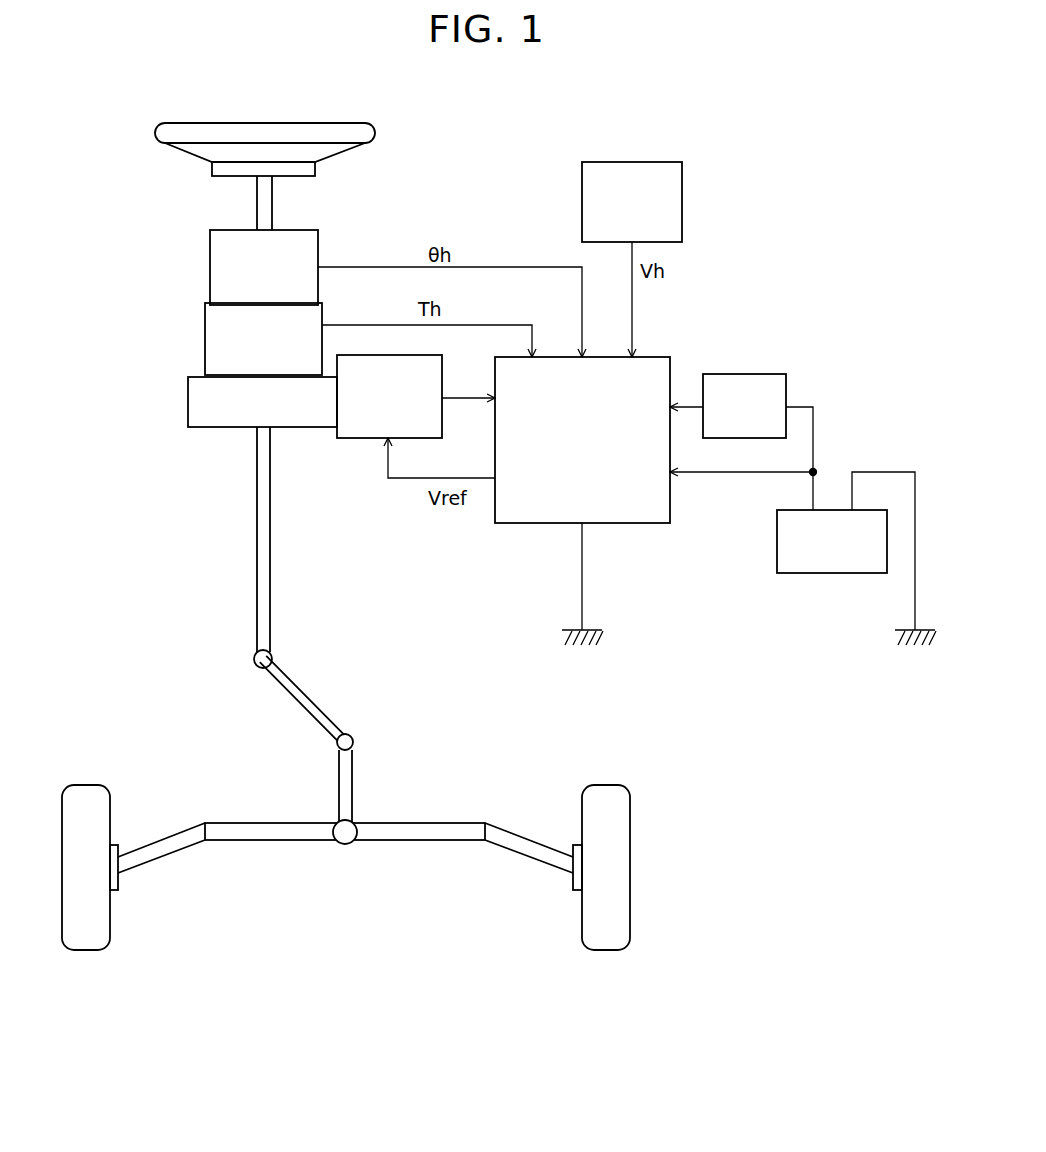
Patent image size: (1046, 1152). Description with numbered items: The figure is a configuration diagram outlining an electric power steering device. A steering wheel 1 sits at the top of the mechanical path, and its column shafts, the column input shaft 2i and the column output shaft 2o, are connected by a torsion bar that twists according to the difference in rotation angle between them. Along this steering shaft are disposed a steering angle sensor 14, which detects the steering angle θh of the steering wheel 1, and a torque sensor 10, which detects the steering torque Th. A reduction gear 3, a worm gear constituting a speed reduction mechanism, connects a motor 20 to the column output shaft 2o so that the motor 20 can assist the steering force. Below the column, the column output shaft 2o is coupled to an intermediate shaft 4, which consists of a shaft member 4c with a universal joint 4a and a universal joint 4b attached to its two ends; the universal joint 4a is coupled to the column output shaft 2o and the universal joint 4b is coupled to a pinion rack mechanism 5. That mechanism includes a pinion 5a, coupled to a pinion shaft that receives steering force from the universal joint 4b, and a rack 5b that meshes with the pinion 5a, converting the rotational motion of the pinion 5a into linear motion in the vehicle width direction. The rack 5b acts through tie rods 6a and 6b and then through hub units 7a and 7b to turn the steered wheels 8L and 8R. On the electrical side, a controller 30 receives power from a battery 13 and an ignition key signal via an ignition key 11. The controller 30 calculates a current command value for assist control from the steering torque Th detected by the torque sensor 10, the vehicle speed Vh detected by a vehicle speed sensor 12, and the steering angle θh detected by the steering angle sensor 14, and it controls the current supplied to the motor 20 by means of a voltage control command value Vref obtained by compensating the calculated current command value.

The steering wheel 1 is at (345, 123).
The column input shaft 2i is at (256, 207).
The steering angle sensor 14 is at (210, 271).
The torque sensor 10 is at (205, 334).
The reduction gear 3 is at (188, 394).
The motor 20 is at (360, 438).
The vehicle speed sensor 12 is at (642, 160).
The controller 30 is at (657, 357).
The ignition key 11 is at (747, 374).
The battery 13 is at (812, 574).
The column output shaft 2o is at (256, 521).
The intermediate shaft 4 is at (259, 738).
The universal joint 4a is at (254, 665).
The universal joint 4b is at (337, 752).
The shaft member 4c is at (298, 708).
The pinion rack mechanism 5 is at (345, 883).
The pinion 5a is at (345, 845).
The rack 5b is at (300, 843).
The tie rod 6a is at (166, 838).
The tie rod 6b is at (518, 841).
The hub unit 7a is at (120, 882).
The hub unit 7b is at (571, 884).
The steered wheel 8L is at (98, 950).
The steered wheel 8R is at (580, 946).